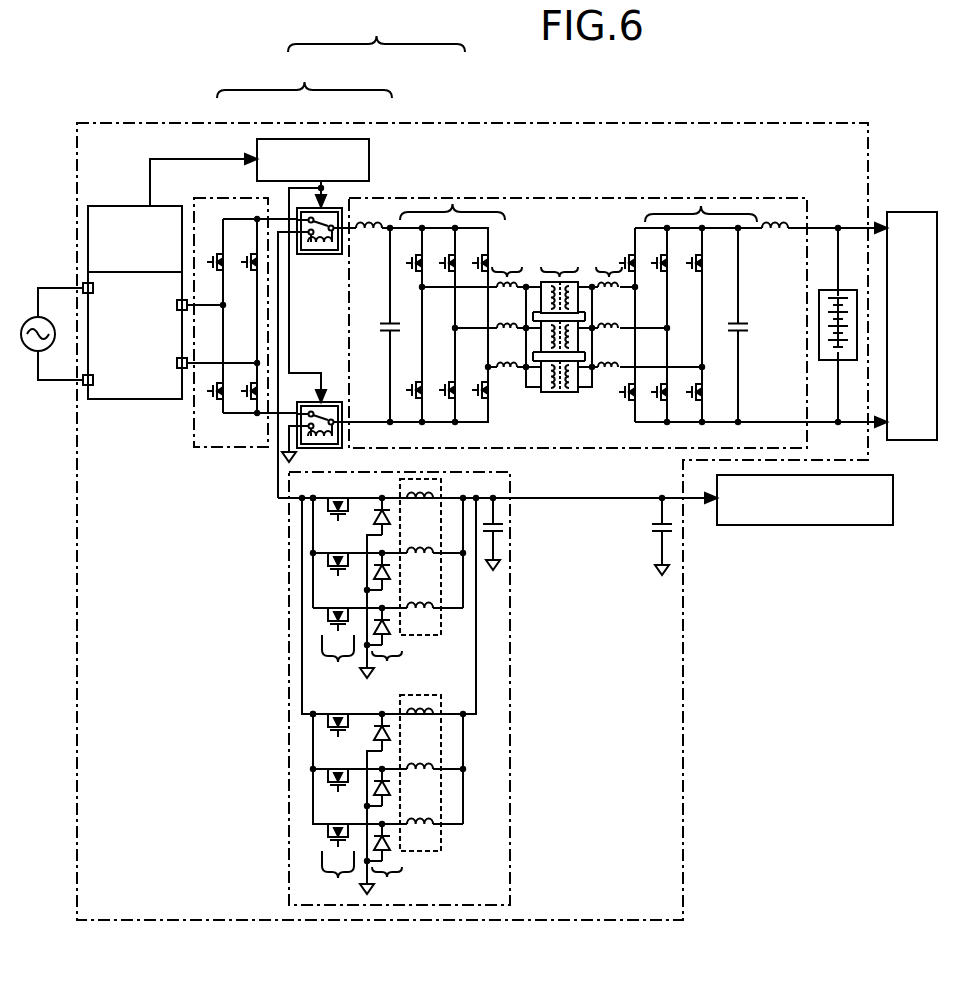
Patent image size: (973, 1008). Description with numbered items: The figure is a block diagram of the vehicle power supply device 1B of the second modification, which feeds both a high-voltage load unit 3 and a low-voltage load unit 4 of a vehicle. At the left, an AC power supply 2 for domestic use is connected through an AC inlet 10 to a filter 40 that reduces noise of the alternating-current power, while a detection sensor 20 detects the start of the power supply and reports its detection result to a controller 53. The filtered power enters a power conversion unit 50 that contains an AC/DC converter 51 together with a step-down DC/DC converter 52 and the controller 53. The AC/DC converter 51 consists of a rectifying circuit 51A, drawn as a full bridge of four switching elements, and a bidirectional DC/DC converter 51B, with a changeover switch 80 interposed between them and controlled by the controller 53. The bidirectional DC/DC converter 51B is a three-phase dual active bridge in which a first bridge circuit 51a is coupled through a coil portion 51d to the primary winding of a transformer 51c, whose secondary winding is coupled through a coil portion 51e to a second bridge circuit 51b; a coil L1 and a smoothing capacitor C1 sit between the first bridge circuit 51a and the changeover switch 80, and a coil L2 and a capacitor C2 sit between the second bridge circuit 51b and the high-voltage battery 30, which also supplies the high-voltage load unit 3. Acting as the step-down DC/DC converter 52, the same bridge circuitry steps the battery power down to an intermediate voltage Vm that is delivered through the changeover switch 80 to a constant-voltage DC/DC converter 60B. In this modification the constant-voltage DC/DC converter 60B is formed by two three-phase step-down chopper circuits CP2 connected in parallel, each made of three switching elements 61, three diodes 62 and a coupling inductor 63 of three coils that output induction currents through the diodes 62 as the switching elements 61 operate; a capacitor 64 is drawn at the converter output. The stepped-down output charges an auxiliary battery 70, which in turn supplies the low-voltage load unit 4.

The vehicle power supply device 1B is at (770, 123).
The AC power supply 2 is at (36, 316).
The AC inlet 10 is at (85, 285).
The detection sensor 20 is at (137, 206).
The filter 40 is at (147, 399).
The controller 53 is at (370, 166).
The rectifying circuit 51A is at (211, 198).
The changeover switch 80 is at (325, 255).
The bidirectional DC/DC converter 51B is at (347, 296).
The intermediate voltage Vm is at (278, 486).
The step-down DC/DC converter 52 is at (468, 198).
The coil L1 is at (375, 234).
The capacitor C1 is at (386, 323).
The first bridge circuit 51a is at (450, 212).
The coil portion 51d is at (508, 308).
The transformer 51c is at (559, 320).
The coil portion 51e is at (604, 272).
The second bridge circuit 51b is at (705, 214).
The capacitor C2 is at (742, 323).
The coil L2 is at (784, 228).
The high-voltage battery 30 is at (854, 290).
The high-voltage load unit 3 is at (897, 212).
The power conversion unit 50 is at (377, 36).
The AC/DC converter 51 is at (304, 75).
The constant-voltage DC/DC converter 60B is at (510, 672).
The three-phase step-down chopper circuit CP2 is at (342, 695).
The switching element 61 is at (338, 699).
The diode 62 is at (381, 699).
The coupling inductor 63 is at (424, 689).
The capacitor 64 is at (497, 532).
The auxiliary battery 70 is at (656, 522).
The low-voltage load unit 4 is at (800, 525).